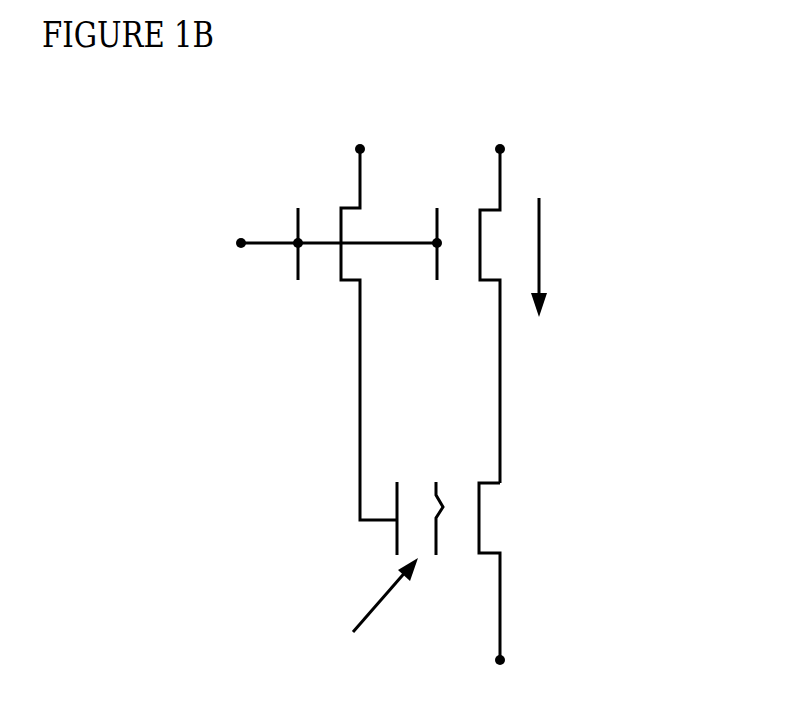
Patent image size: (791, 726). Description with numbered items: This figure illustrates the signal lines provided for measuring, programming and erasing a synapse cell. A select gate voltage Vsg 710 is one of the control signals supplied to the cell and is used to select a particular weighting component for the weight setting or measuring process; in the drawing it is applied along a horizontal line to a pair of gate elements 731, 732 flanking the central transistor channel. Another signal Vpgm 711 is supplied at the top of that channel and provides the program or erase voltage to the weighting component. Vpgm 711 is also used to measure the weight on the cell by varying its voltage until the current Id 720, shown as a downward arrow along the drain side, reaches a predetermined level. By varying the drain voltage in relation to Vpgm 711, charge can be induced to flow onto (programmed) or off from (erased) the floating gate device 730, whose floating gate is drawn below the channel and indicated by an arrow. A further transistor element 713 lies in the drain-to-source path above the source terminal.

The select gate voltage Vsg signal 710 is at (241, 232).
The Vpgm signal 711 is at (363, 113).
The source side transistor 713 is at (519, 607).
The current Id 720 is at (560, 238).
The floating gate device 730 is at (378, 538).
The left select gate 731 is at (315, 297).
The right select gate 732 is at (455, 298).